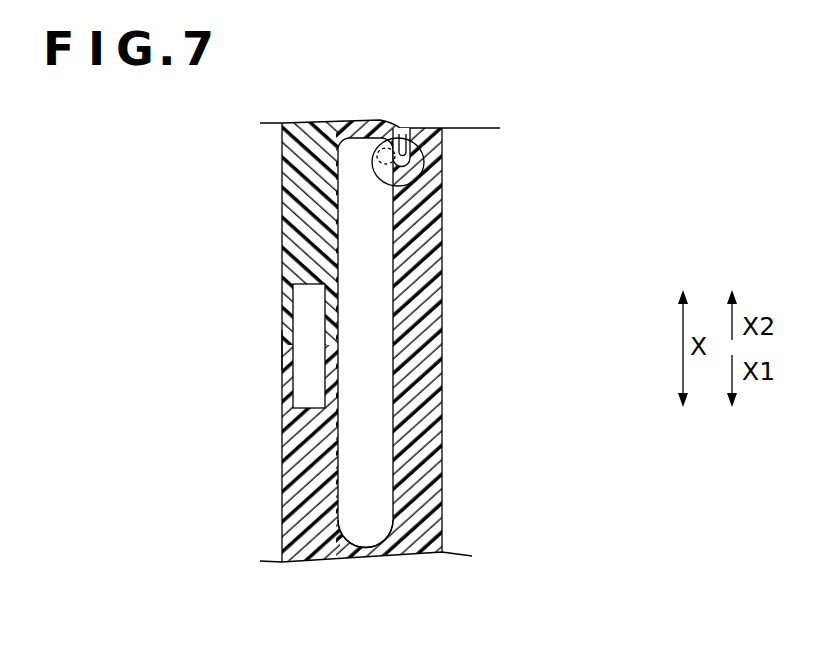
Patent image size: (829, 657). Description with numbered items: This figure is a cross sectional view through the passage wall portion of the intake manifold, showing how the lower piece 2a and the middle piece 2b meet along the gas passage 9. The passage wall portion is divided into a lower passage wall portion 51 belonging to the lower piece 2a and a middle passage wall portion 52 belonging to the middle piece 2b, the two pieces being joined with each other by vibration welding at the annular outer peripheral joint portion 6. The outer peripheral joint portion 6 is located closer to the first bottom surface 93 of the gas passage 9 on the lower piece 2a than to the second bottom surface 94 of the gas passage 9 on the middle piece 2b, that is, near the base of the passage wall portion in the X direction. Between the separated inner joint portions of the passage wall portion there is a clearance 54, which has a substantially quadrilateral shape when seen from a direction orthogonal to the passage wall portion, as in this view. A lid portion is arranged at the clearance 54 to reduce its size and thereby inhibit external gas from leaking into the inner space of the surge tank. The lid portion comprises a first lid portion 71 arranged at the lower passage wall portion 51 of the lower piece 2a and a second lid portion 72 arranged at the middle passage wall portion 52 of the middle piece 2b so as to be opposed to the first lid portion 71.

The lower piece 2a is at (256, 142).
The middle piece 2b is at (246, 559).
The lower passage wall portion 51 is at (282, 185).
The middle passage wall portion 52 is at (282, 488).
The clearance 54 is at (306, 313).
The second lid portion 72 is at (283, 343).
The first lid portion 71 is at (338, 350).
The gas passage 9 is at (378, 275).
The first bottom surface 93 is at (400, 172).
The outer peripheral joint portion 6 is at (450, 140).
The second bottom surface 94 is at (360, 552).